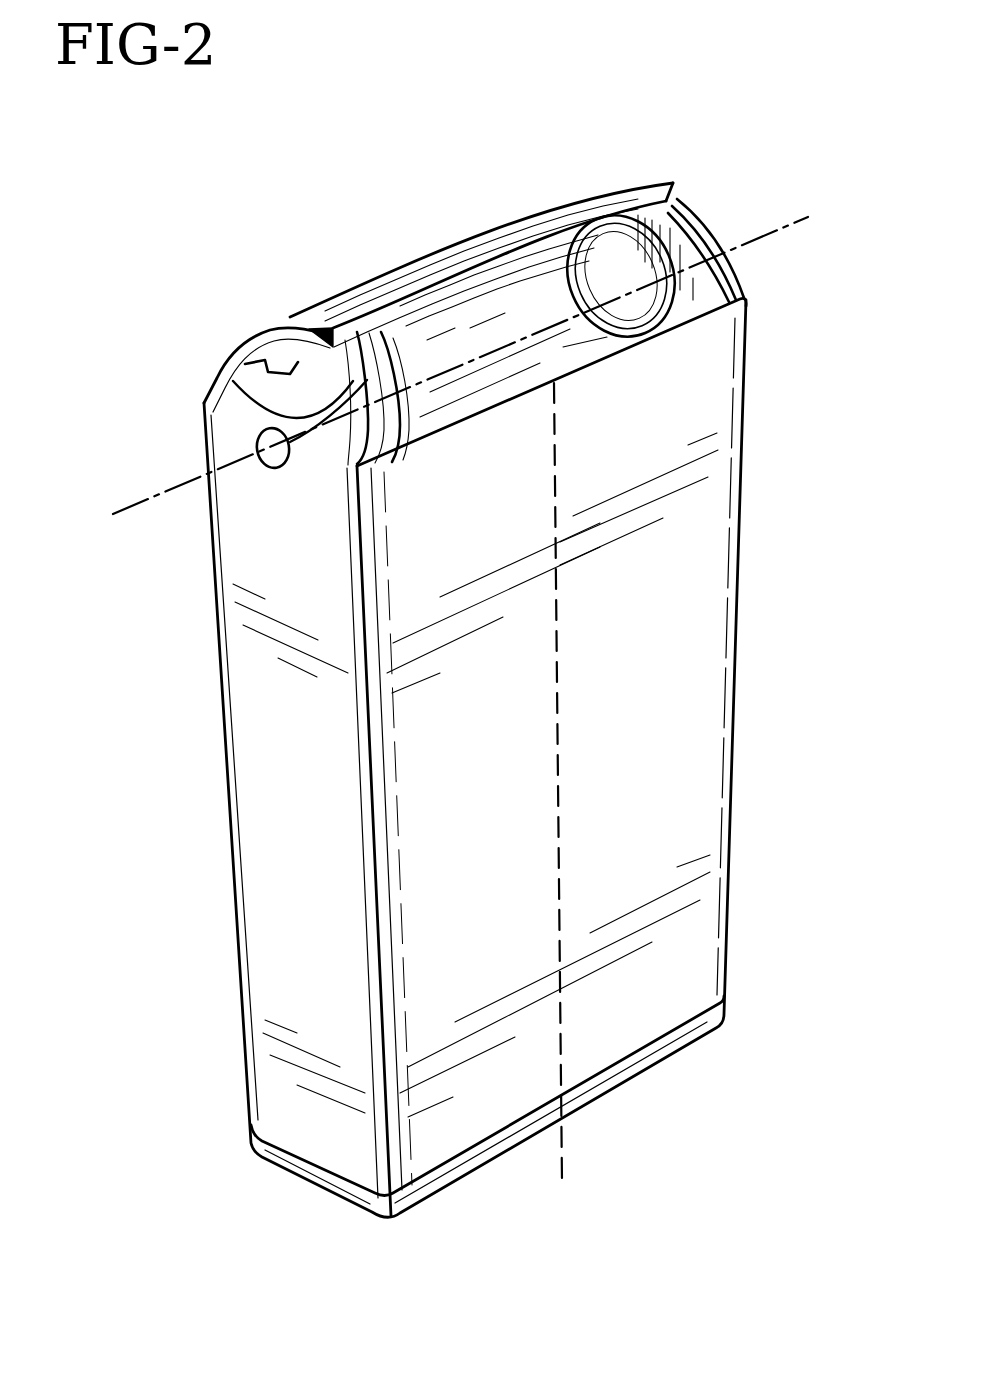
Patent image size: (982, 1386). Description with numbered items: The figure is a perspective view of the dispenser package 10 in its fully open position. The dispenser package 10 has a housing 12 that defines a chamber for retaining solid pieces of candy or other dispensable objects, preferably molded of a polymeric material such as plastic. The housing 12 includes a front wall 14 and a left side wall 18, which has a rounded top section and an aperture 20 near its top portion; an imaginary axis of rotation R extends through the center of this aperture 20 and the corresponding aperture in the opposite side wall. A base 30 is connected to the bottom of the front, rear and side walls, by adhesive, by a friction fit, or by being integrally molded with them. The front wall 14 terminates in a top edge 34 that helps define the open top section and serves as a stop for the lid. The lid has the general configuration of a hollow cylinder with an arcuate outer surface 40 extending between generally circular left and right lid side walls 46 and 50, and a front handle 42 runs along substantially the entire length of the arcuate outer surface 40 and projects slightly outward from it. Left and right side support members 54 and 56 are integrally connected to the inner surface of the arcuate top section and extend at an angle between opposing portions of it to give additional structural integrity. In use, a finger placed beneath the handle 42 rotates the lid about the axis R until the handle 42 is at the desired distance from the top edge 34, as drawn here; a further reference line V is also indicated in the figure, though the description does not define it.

The dispenser package 10 is at (196, 282).
The housing 12 is at (700, 754).
The front wall 14 is at (693, 910).
The left side wall 18 is at (288, 897).
The aperture 20 is at (262, 458).
The base 30 is at (627, 1067).
The top edge 34 is at (580, 373).
The arcuate outer surface 40 is at (463, 256).
The front handle 42 is at (672, 184).
The left side wall 46 is at (233, 381).
The right side wall 50 is at (740, 272).
The left side support member 54 is at (390, 358).
The right side support member 56 is at (597, 262).
The axis of rotation R is at (140, 502).
The vertical axis V is at (562, 1145).